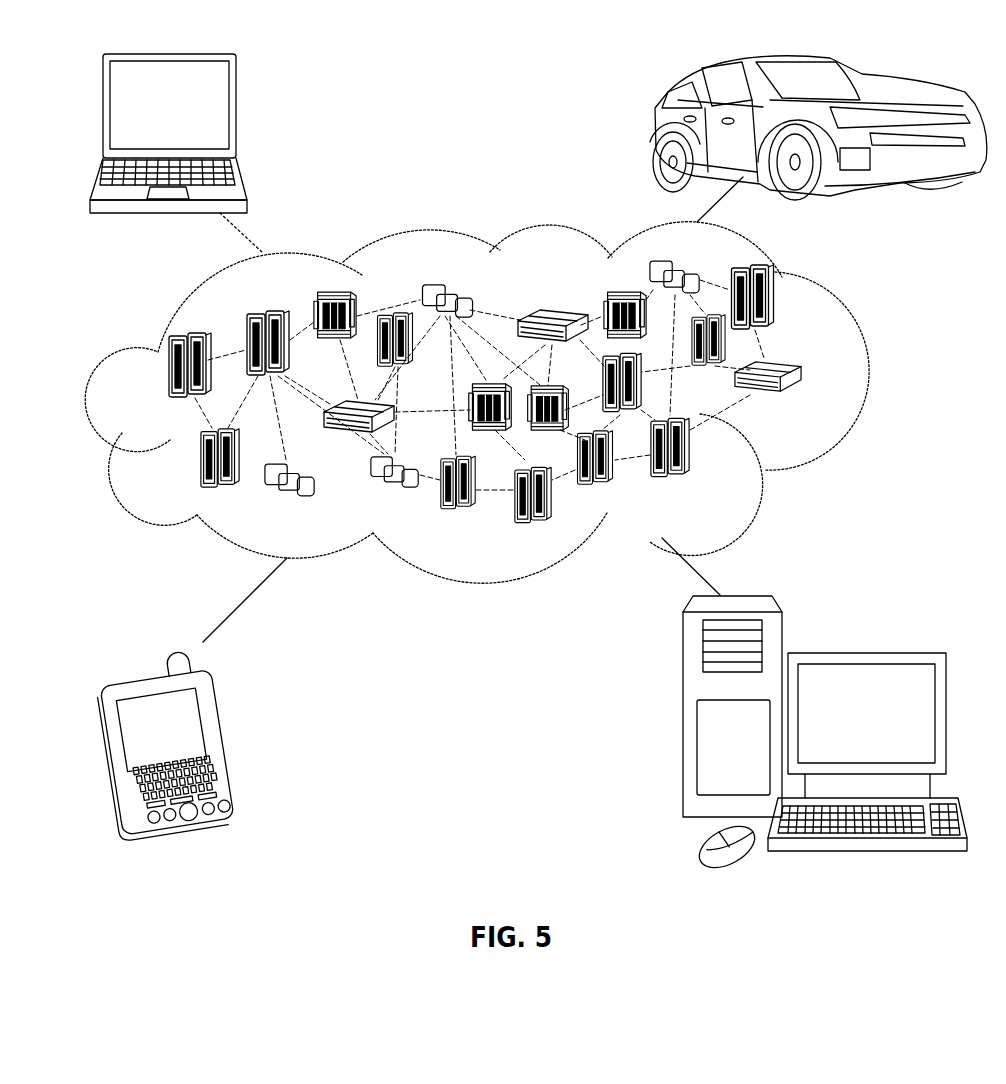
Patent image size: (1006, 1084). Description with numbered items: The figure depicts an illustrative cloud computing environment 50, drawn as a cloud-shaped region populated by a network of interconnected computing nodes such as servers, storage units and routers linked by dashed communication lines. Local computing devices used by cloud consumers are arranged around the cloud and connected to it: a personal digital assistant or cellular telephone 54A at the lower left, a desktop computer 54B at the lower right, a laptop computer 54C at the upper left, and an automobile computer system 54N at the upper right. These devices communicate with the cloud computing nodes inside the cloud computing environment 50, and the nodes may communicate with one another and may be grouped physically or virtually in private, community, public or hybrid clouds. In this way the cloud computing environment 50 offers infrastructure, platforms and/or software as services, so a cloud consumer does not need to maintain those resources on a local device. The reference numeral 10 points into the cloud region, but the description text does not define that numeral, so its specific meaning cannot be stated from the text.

The cloud computing node 10 is at (812, 406).
The cloud computing environment 50 is at (866, 375).
The personal digital assistant or cellular telephone 54A is at (223, 740).
The desktop computer 54B is at (862, 653).
The laptop computer 54C is at (237, 113).
The automobile computer system 54N is at (656, 131).